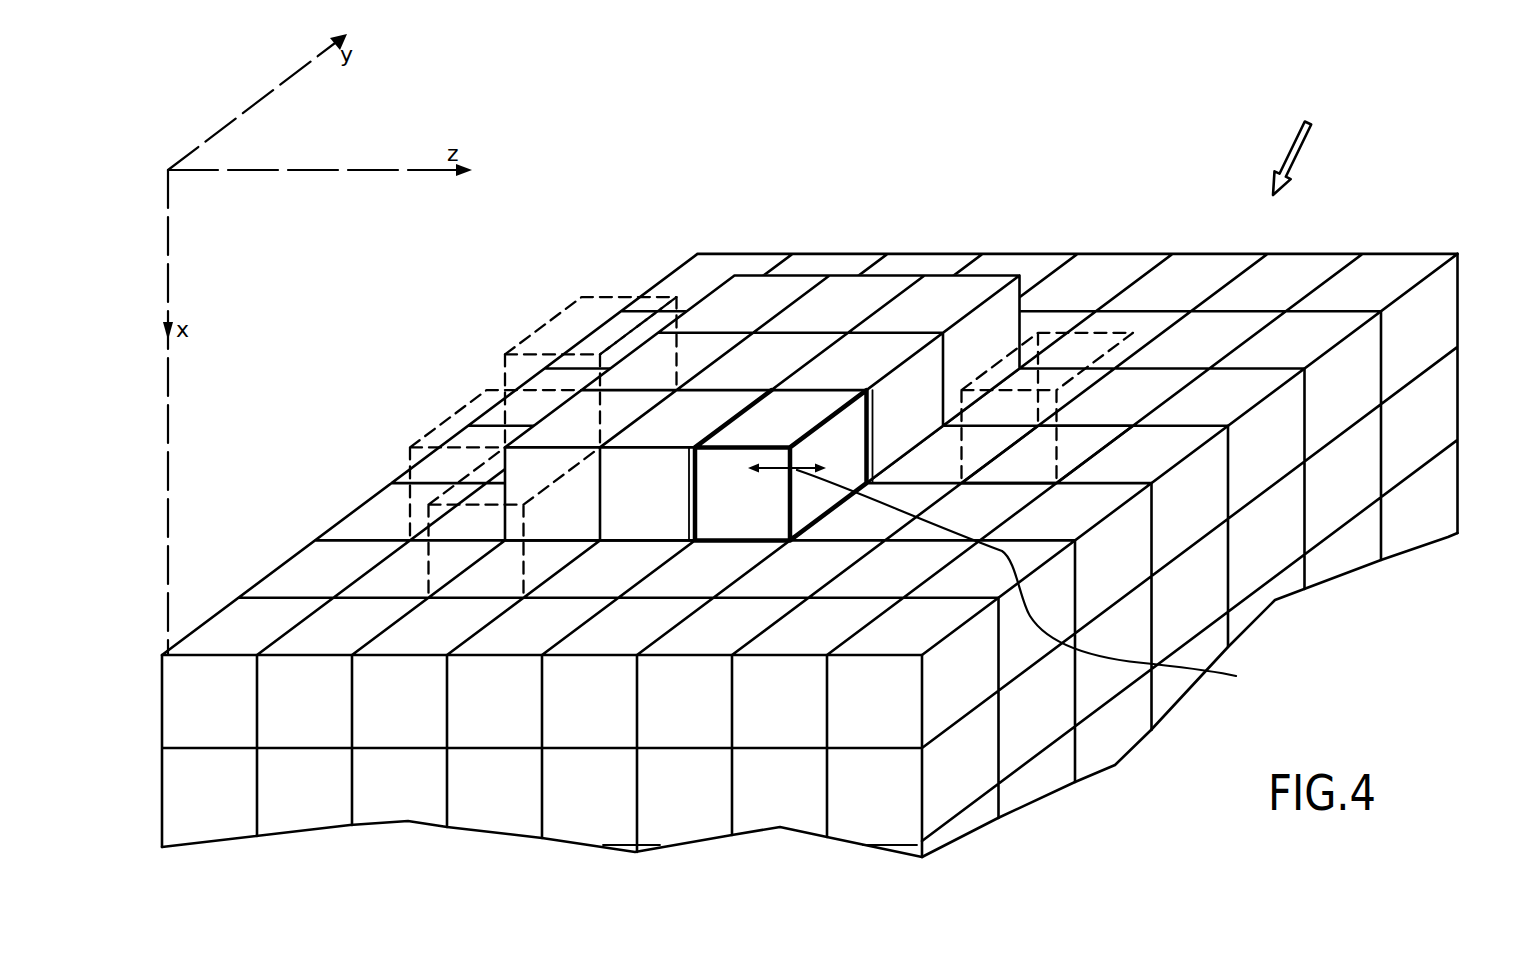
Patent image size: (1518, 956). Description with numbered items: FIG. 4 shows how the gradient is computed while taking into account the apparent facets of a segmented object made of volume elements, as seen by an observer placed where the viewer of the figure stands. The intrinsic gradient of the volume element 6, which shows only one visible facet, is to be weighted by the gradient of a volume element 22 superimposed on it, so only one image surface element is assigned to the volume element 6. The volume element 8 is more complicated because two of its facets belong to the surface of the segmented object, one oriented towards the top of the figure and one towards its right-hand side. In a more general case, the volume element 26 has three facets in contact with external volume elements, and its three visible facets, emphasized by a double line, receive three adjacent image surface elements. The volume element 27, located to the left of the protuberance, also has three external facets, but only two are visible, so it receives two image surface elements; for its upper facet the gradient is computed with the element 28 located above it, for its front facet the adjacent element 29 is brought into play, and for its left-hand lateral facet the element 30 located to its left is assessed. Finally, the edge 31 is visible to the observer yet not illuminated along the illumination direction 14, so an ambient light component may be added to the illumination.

The volume element 6 is at (1030, 455).
The volume element 8 is at (870, 353).
The illumination direction 14 is at (1303, 147).
The volume element 22 is at (1128, 330).
The volume element 26 is at (763, 430).
The volume element 27 is at (572, 423).
The volume element 28 is at (618, 297).
The volume element 29 is at (487, 490).
The volume element 30 is at (462, 423).
The edge 31 is at (1007, 577).